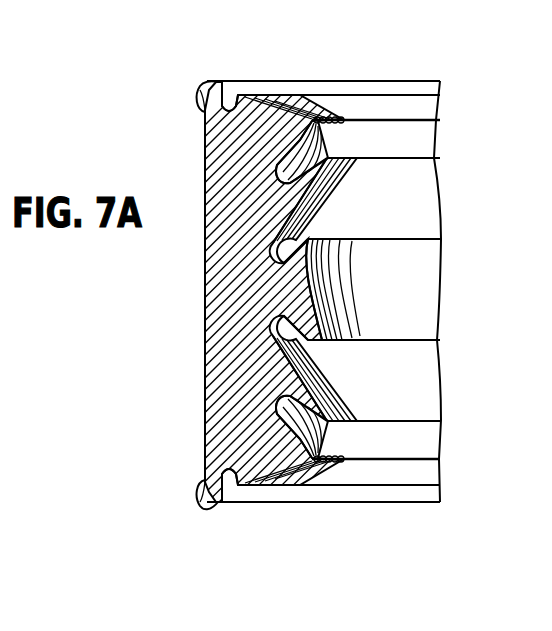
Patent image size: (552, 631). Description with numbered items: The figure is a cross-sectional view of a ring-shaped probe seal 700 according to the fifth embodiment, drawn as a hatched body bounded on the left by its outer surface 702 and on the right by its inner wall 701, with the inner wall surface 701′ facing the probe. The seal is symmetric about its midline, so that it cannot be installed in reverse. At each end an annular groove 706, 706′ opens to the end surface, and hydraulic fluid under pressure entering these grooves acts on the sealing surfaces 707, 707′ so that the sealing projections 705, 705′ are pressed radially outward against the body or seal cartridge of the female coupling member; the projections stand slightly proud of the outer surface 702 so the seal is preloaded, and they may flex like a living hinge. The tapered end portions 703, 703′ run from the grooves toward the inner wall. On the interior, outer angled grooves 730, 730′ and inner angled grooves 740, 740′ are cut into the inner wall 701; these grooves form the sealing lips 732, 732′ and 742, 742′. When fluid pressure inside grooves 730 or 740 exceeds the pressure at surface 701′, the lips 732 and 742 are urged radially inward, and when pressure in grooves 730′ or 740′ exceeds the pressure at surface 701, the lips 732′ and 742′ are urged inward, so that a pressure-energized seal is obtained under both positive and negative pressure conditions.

The probe seal 700 is at (452, 103).
The inner wall 701 is at (420, 122).
The inner wall surface 701′ is at (418, 462).
The outer surface 702 is at (225, 360).
The flange 703 is at (272, 102).
The flange 703′ is at (276, 482).
The sealing projection 705 is at (206, 84).
The sealing projection 705′ is at (207, 500).
The annular groove 706 is at (231, 105).
The annular groove 706′ is at (230, 490).
The sealing surface 707 is at (197, 88).
The pressure-energized sealing surface 707′ is at (200, 492).
The outer angled groove 730 is at (276, 174).
The outer angled groove 730′ is at (276, 405).
The sealing lip 732 is at (331, 164).
The sealing lip 732′ is at (331, 415).
The inner angled groove 740 is at (273, 251).
The inner angled groove 740′ is at (273, 328).
The sealing lip 742 is at (333, 250).
The sealing lip 742′ is at (328, 334).